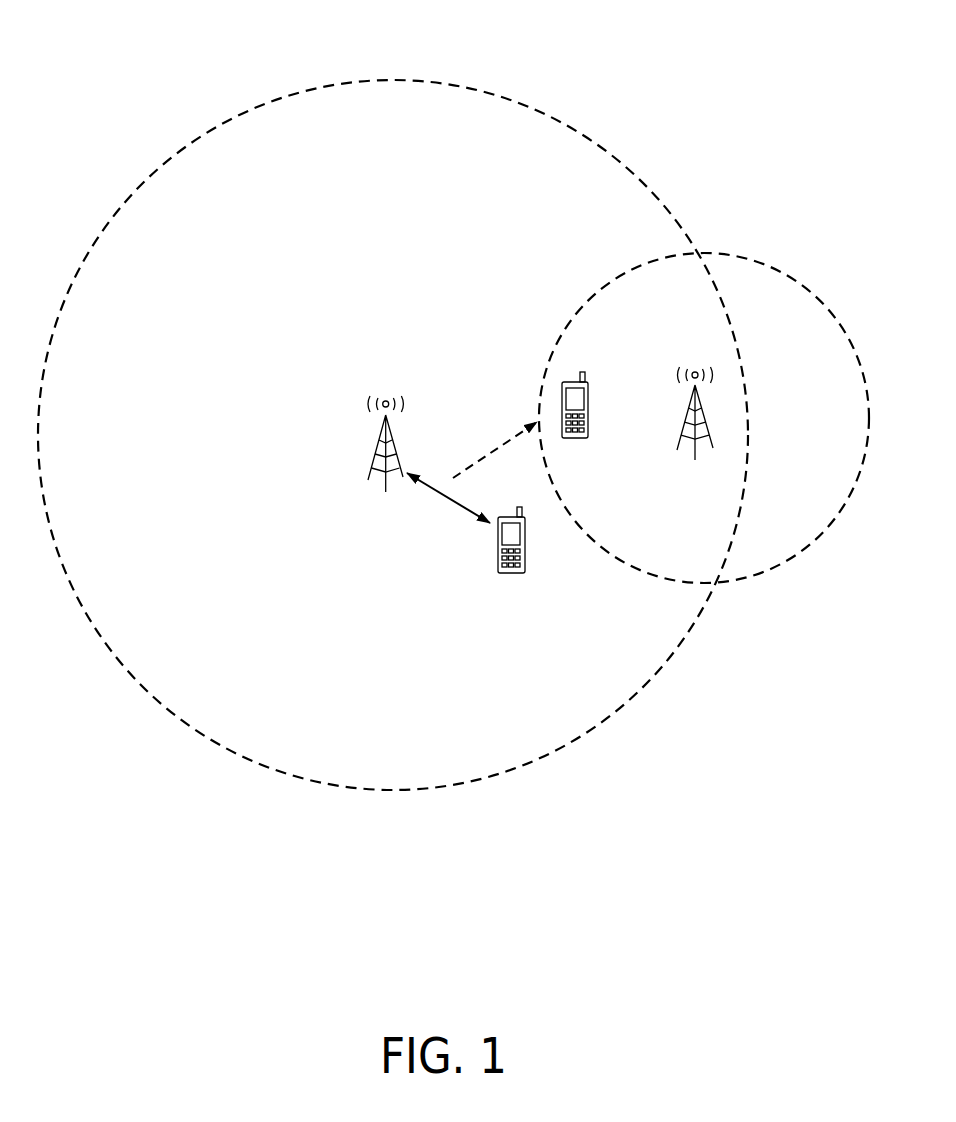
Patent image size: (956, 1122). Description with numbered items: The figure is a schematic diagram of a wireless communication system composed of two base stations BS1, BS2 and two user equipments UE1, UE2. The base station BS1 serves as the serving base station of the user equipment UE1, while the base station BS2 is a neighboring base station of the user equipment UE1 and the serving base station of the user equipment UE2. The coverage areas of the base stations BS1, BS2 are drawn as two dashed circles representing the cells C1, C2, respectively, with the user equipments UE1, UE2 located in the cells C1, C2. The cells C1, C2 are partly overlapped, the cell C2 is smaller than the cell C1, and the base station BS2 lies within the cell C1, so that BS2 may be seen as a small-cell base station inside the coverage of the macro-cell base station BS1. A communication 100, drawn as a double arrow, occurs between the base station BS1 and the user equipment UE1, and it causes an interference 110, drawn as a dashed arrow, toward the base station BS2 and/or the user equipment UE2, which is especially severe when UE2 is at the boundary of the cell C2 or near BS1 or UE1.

The cell C1 is at (395, 80).
The cell C2 is at (822, 307).
The base station BS1 is at (373, 458).
The base station BS2 is at (695, 457).
The user equipment UE1 is at (508, 575).
The user equipment UE2 is at (575, 440).
The communication 100 is at (441, 507).
The interference 110 is at (491, 450).